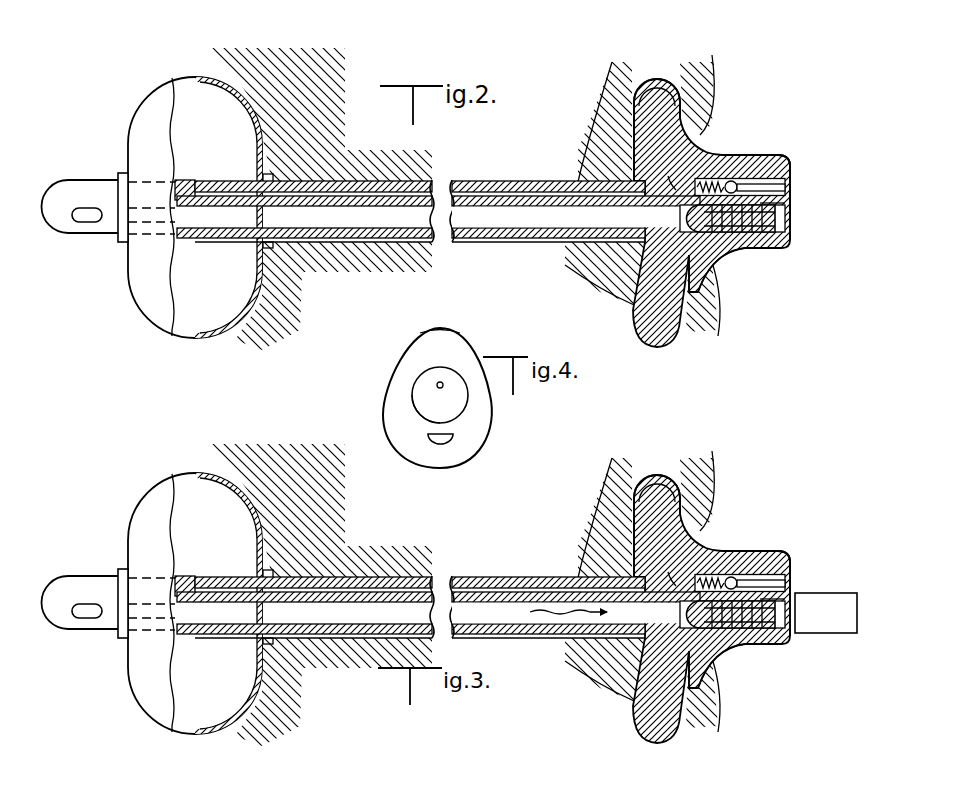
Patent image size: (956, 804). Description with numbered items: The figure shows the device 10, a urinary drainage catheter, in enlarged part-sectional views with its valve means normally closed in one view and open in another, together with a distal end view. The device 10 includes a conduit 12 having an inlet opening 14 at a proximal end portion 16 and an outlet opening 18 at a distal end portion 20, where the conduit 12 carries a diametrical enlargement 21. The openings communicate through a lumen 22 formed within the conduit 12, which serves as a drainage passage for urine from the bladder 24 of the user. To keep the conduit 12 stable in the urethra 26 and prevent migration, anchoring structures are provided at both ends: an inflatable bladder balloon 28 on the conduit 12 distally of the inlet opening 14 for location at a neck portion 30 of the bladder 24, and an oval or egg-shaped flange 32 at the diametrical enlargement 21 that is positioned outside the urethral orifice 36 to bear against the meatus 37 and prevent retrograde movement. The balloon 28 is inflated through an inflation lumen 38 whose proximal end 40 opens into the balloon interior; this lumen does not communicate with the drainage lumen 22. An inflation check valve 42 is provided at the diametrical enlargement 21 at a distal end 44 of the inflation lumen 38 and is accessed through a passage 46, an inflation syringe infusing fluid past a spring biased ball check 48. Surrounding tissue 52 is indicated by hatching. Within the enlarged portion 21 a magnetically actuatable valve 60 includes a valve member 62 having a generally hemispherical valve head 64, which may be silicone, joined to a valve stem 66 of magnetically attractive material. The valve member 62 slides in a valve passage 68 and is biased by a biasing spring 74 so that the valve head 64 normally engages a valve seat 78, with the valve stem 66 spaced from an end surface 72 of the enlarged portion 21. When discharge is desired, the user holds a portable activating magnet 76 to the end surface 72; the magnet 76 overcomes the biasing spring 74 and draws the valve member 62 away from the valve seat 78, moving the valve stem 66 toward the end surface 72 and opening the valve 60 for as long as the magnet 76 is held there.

In FIG. 2, the device 10 is at (305, 119).
In FIG. 4, the device 10 is at (400, 337).
In FIG. 3, the device 10 is at (366, 539).
In FIG. 2, the conduit 12 is at (368, 179).
In FIG. 3, the conduit 12 is at (398, 574).
In FIG. 2, the inlet opening 14 is at (80, 226).
In FIG. 3, the inlet opening 14 is at (87, 611).
In FIG. 2, the proximal end portion 16 is at (70, 178).
In FIG. 3, the proximal end portion 16 is at (66, 575).
In FIG. 2, the outlet opening 18 is at (704, 262).
In FIG. 4, the outlet opening 18 is at (445, 445).
In FIG. 3, the outlet opening 18 is at (710, 645).
In FIG. 2, the distal end portion 20 is at (768, 257).
In FIG. 4, the distal end portion 20 is at (450, 368).
In FIG. 3, the distal end portion 20 is at (786, 643).
In FIG. 2, the diametrical enlargement 21 is at (780, 160).
In FIG. 4, the diametrical enlargement 21 is at (458, 425).
In FIG. 3, the diametrical enlargement 21 is at (790, 555).
In FIG. 2, the lumen 22 is at (528, 222).
In FIG. 3, the lumen 22 is at (512, 618).
In FIG. 2, the bladder 24 is at (216, 352).
In FIG. 3, the bladder 24 is at (322, 595).
In FIG. 2, the urethra 26 is at (522, 195).
In FIG. 3, the urethra 26 is at (492, 575).
In FIG. 2, the inflatable bladder balloon 28 is at (162, 84).
In FIG. 3, the inflatable bladder balloon 28 is at (186, 470).
In FIG. 2, the neck portion 30 is at (258, 252).
In FIG. 3, the neck portion 30 is at (303, 660).
In FIG. 2, the flange 32 is at (668, 88).
In FIG. 4, the flange 32 is at (450, 326).
In FIG. 3, the flange 32 is at (670, 500).
In FIG. 2, the urethral orifice 36 is at (592, 180).
In FIG. 3, the urethral orifice 36 is at (622, 550).
In FIG. 2, the meatus 37 is at (645, 82).
In FIG. 3, the meatus 37 is at (635, 472).
In FIG. 2, the inflation lumen 38 is at (478, 184).
In FIG. 3, the inflation lumen 38 is at (520, 580).
In FIG. 2, the proximal end 40 is at (190, 180).
In FIG. 3, the proximal end 40 is at (198, 578).
In FIG. 2, the inflation check valve 42 is at (719, 177).
In FIG. 3, the inflation check valve 42 is at (723, 571).
In FIG. 2, the distal end 44 is at (790, 168).
In FIG. 3, the distal end 44 is at (795, 568).
In FIG. 2, the passage 46 is at (785, 187).
In FIG. 4, the passage 46 is at (437, 385).
In FIG. 3, the passage 46 is at (800, 583).
In FIG. 2, the spring biased ball check 48 is at (745, 183).
In FIG. 3, the spring biased ball check 48 is at (745, 582).
In FIG. 2, the tissue 52 is at (712, 80).
In FIG. 3, the tissue 52 is at (700, 480).
In FIG. 2, the magnetically actuatable valve 60 is at (733, 258).
In FIG. 3, the magnetically actuatable valve 60 is at (748, 640).
In FIG. 2, the valve member 62 is at (742, 262).
In FIG. 3, the valve member 62 is at (782, 640).
In FIG. 2, the valve head 64 is at (612, 250).
In FIG. 3, the valve head 64 is at (695, 630).
In FIG. 2, the valve stem 66 is at (778, 258).
In FIG. 3, the valve stem 66 is at (788, 641).
In FIG. 2, the valve passage 68 is at (775, 218).
In FIG. 3, the valve passage 68 is at (737, 614).
In FIG. 2, the end surface 72 is at (785, 243).
In FIG. 4, the end surface 72 is at (465, 404).
In FIG. 3, the end surface 72 is at (792, 637).
In FIG. 2, the biasing spring 74 is at (786, 203).
In FIG. 3, the biasing spring 74 is at (760, 640).
In FIG. 3, the activating magnet 76 is at (836, 622).
In FIG. 2, the valve seat 78 is at (676, 168).
In FIG. 3, the valve seat 78 is at (687, 580).